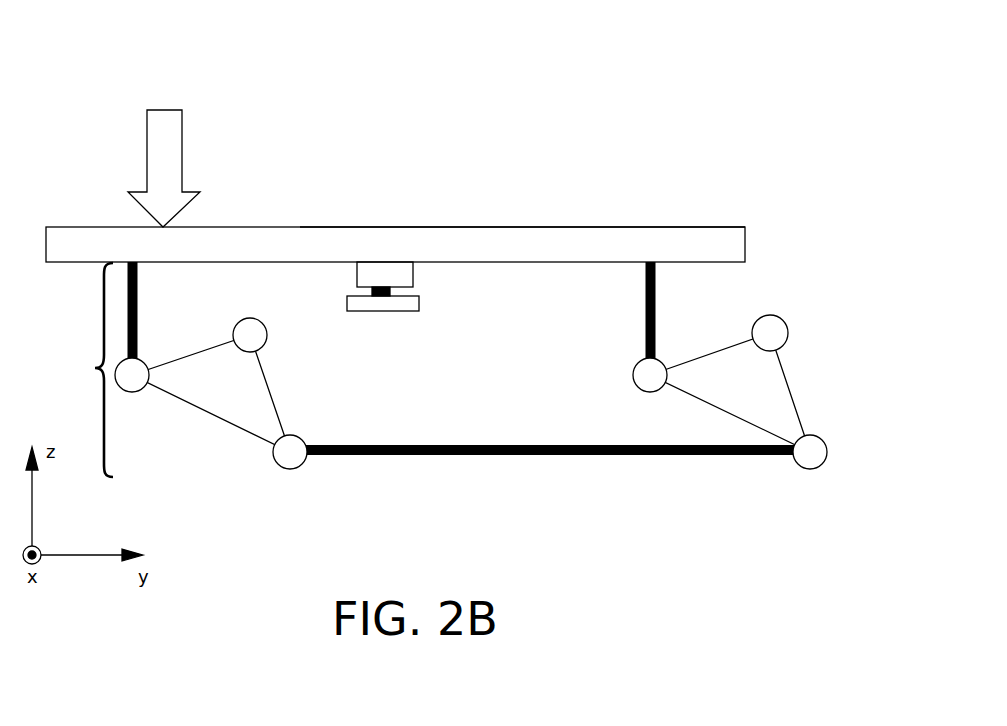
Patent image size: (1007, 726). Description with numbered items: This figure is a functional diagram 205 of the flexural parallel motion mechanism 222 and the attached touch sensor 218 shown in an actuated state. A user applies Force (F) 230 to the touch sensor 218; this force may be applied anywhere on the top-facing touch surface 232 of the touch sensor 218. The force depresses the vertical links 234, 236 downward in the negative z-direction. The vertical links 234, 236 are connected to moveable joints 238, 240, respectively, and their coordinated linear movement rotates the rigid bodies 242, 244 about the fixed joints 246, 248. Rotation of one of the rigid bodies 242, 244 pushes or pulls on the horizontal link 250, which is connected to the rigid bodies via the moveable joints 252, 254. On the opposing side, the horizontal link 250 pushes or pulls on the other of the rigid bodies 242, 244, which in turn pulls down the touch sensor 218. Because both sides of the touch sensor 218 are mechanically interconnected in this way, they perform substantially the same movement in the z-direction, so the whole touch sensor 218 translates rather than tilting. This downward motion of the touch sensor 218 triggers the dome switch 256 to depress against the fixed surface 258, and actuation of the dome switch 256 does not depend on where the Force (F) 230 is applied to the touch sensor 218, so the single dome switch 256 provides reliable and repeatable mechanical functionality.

The functional diagram 205 is at (558, 108).
The touch sensor 218 is at (288, 256).
The flexural parallel motion mechanism 222 is at (80, 380).
The Force (F) 230 is at (153, 118).
The top-facing touch surface 232 is at (577, 227).
The vertical link 234 is at (138, 324).
The vertical link 236 is at (656, 317).
The moveable joint 238 is at (137, 376).
The moveable joint 240 is at (645, 378).
The rigid body 242 is at (240, 396).
The rigid body 244 is at (763, 396).
The fixed joint 246 is at (257, 333).
The fixed joint 248 is at (770, 333).
The horizontal link 250 is at (573, 452).
The moveable joint 252 is at (293, 455).
The moveable joint 254 is at (808, 454).
The dome switch 256 is at (413, 274).
The fixed surface 258 is at (410, 311).